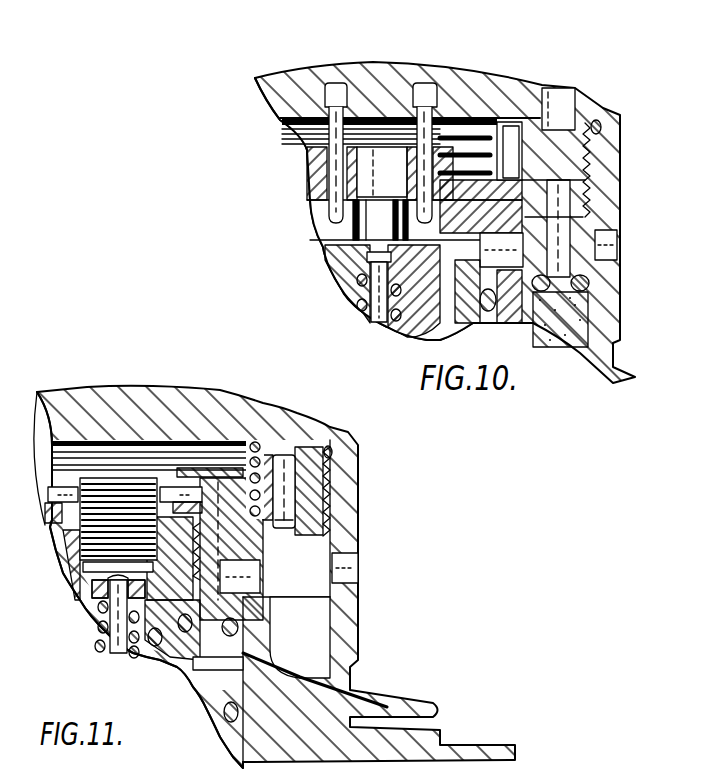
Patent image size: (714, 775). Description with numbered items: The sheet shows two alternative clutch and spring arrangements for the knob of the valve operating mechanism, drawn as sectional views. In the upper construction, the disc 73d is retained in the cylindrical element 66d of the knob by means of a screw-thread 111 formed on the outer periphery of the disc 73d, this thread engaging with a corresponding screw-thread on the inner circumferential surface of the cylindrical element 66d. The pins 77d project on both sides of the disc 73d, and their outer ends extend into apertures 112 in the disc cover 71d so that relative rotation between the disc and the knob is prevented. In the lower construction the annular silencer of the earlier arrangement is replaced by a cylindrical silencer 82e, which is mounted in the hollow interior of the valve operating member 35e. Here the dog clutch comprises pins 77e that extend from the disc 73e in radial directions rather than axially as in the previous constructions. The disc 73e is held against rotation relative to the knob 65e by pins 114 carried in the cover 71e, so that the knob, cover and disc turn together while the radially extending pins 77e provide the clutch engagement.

In FIG. 10, the apertures 112 is at (340, 97).
In FIG. 10, the disc 73d is at (453, 147).
In FIG. 10, the disc cover 71d is at (283, 102).
In FIG. 10, the pins 77d is at (335, 167).
In FIG. 10, the screw-thread 111 is at (607, 157).
In FIG. 10, the cylindrical element 66d is at (607, 203).
In FIG. 11, the valve operating member 35e is at (37, 392).
In FIG. 11, the cover 71e is at (125, 487).
In FIG. 11, the cylindrical silencer 82e is at (178, 485).
In FIG. 11, the pins 77e is at (225, 445).
In FIG. 11, the pins 114 is at (287, 478).
In FIG. 11, the disc 73e is at (263, 507).
In FIG. 11, the knob 65e is at (362, 595).